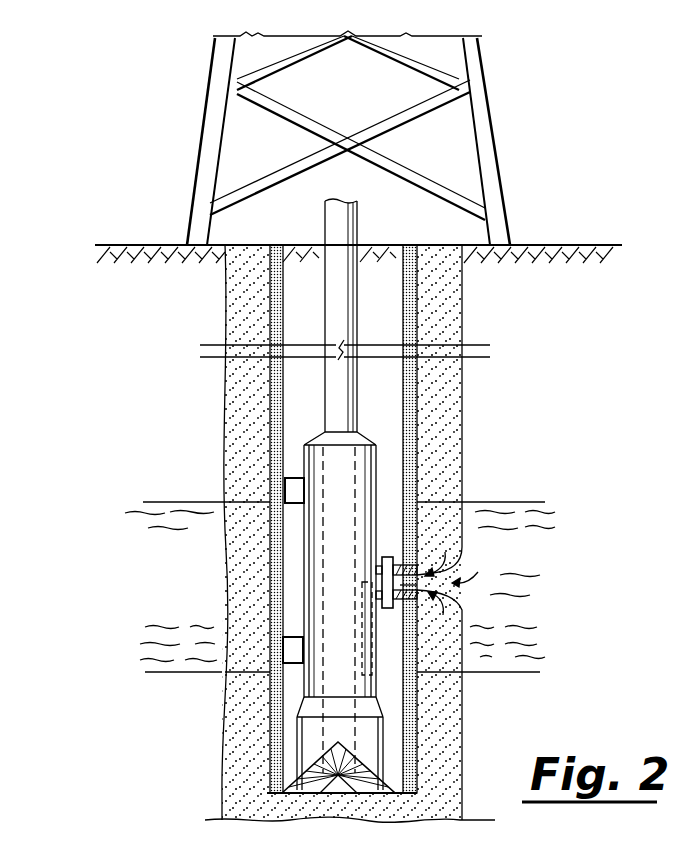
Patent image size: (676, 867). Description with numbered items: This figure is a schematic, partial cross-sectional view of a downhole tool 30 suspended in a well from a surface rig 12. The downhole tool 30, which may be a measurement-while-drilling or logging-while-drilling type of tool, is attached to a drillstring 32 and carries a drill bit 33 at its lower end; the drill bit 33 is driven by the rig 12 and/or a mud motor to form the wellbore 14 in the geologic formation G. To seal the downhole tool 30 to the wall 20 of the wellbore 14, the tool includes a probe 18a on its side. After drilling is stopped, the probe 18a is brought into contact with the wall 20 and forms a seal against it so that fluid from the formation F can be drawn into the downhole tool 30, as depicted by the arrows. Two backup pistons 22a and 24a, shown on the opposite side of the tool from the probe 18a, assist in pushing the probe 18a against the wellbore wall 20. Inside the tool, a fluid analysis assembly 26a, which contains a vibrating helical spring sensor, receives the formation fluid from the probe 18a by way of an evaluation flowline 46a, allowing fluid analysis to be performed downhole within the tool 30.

The rig 12 is at (497, 137).
The wellbore 14 is at (404, 263).
The wall of the wellbore 20 is at (417, 635).
The downhole tool 30 is at (381, 481).
The drillstring 32 is at (323, 297).
The drill bit 33 is at (290, 783).
The backup piston 22a is at (292, 476).
The backup piston 24a is at (296, 636).
The fluid analysis assembly 26a is at (355, 632).
The evaluation flowline 46a is at (362, 602).
The probe 18a is at (402, 566).
The formation F is at (143, 648).
The geologic formation G is at (537, 461).